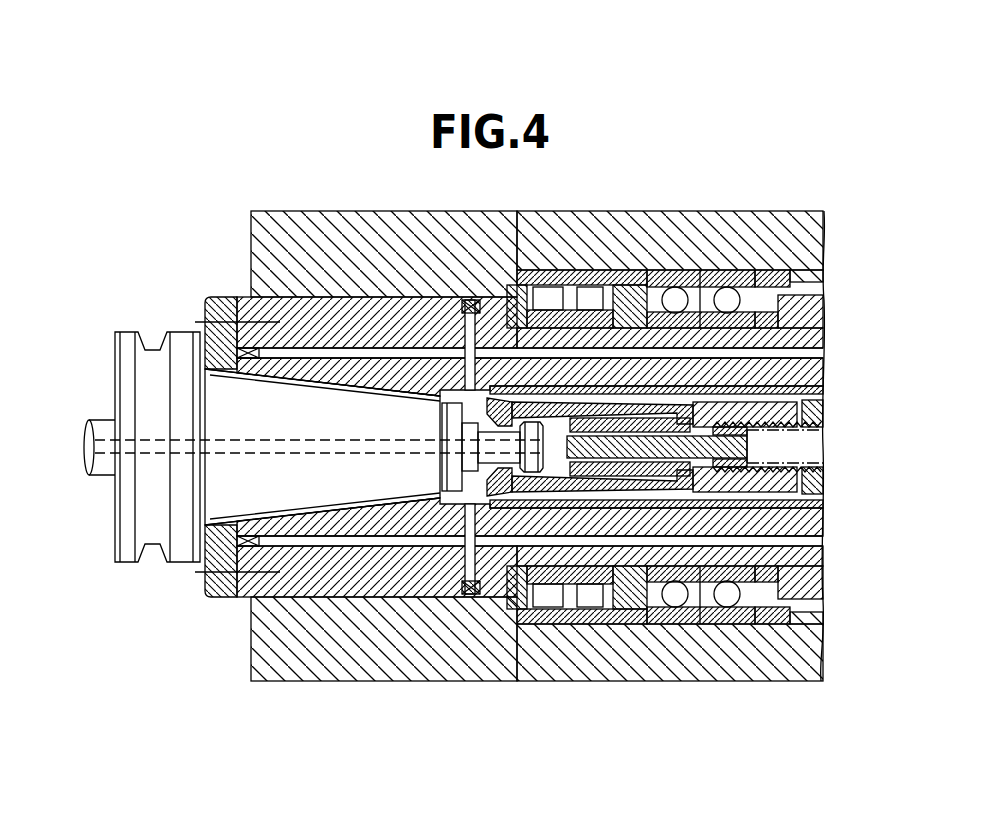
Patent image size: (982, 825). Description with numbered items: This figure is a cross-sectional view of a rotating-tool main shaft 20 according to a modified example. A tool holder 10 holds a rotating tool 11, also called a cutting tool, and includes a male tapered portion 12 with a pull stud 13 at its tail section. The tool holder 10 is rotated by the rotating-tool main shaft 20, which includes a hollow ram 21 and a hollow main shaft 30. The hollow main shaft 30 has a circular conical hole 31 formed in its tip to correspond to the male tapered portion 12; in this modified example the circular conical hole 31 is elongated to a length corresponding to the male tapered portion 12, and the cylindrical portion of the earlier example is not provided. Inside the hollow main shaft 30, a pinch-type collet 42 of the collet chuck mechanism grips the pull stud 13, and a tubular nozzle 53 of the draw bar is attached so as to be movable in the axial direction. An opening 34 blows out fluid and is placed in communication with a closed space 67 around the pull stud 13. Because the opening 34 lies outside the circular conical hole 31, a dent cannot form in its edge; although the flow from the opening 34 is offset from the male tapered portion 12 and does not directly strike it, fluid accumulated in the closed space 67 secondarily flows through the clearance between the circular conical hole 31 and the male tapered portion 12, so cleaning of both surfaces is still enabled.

The tool holder 10 is at (170, 318).
The rotating tool 11 is at (112, 420).
The male tapered portion 12 is at (320, 468).
The pull stud 13 is at (482, 452).
The rotating-tool main shaft 20 is at (775, 190).
The hollow ram 21 is at (643, 245).
The hollow main shaft 30 is at (325, 320).
The circular conical hole 31 is at (308, 394).
The opening 34 is at (470, 392).
The collet 42 is at (521, 470).
The nozzle 53 is at (553, 472).
The closed space 67 is at (476, 408).